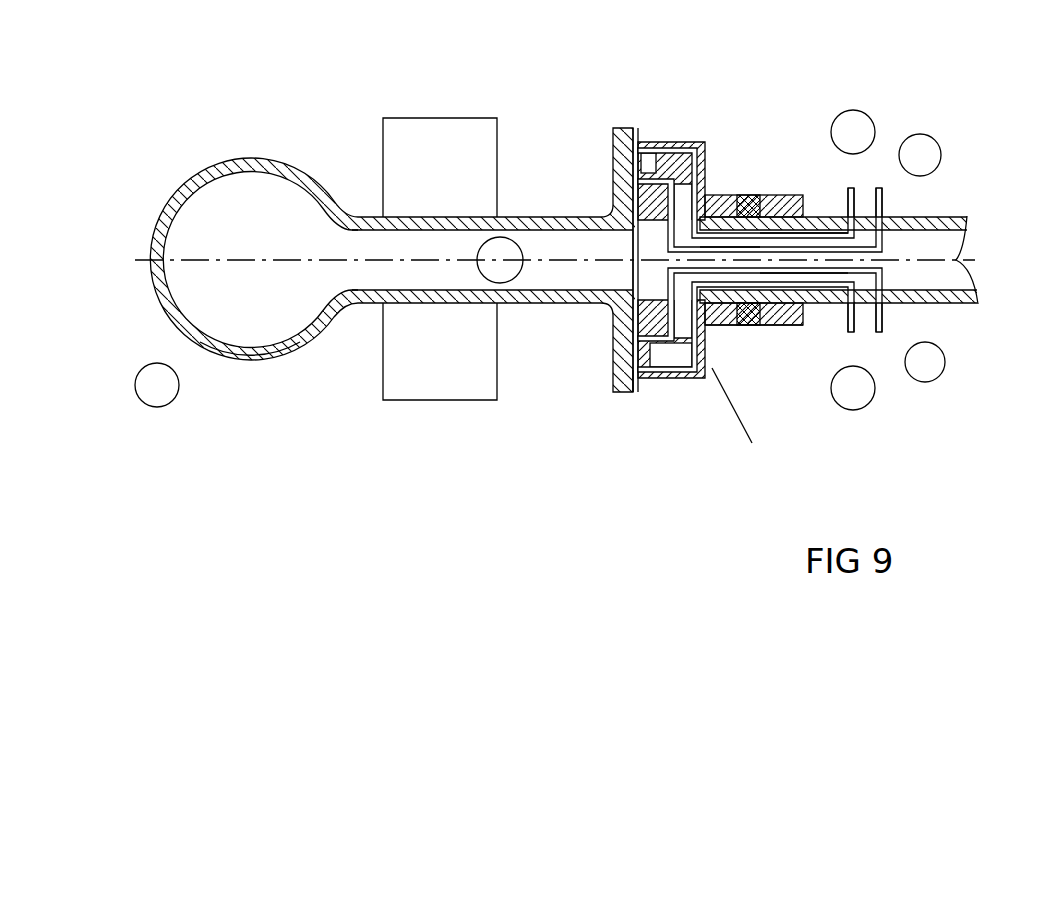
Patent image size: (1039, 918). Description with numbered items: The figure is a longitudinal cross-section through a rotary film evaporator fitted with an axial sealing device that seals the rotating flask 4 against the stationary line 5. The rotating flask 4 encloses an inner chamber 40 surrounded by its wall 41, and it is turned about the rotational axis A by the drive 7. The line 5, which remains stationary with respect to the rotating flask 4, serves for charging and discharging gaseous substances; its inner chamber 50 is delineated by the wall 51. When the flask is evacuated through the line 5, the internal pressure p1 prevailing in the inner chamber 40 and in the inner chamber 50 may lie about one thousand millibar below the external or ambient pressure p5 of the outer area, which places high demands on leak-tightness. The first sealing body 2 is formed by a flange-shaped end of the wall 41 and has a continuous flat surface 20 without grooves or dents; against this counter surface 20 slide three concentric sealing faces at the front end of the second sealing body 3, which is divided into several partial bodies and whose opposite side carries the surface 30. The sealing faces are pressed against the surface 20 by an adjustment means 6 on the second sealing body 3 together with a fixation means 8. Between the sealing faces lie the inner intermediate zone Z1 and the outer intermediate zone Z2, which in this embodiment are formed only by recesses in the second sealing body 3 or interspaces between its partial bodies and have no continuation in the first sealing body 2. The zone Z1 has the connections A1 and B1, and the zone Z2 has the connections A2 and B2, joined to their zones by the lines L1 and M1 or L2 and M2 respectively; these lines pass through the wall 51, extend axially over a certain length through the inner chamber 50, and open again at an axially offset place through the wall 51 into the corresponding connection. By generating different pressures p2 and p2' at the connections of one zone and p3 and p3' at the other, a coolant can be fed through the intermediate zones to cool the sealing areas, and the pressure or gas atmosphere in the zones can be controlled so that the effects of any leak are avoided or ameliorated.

The inner chamber 40 is at (237, 200).
The wall of the rotating flask 41 is at (274, 350).
The rotating flask 4 is at (313, 178).
The rotational axis A is at (311, 262).
The drive 7 is at (395, 120).
The surface 30 is at (626, 128).
The first sealing body 2 is at (618, 390).
The flat surface 20 is at (638, 390).
The second sealing body 3 is at (670, 380).
The inner intermediate zone Z1 is at (663, 162).
The outer intermediate zone Z2 is at (660, 195).
The adjustment means 6 is at (752, 194).
The fixation means 8 is at (792, 195).
The line 5 is at (1010, 356).
The inner chamber of the line 50 is at (953, 262).
The wall of the line 51 is at (930, 306).
The connection A1 is at (881, 201).
The connection A2 is at (848, 207).
The connection B1 is at (883, 316).
The connection B2 is at (848, 312).
The line L1 is at (880, 240).
The line L2 is at (718, 245).
The line M1 is at (884, 266).
The line M2 is at (818, 312).
The internal pressure p1 is at (500, 260).
The pressure p2 is at (909, 163).
The pressure p3 is at (853, 151).
The external pressure p5 is at (157, 385).
The pressure p2' is at (912, 356).
The pressure p3' is at (854, 369).